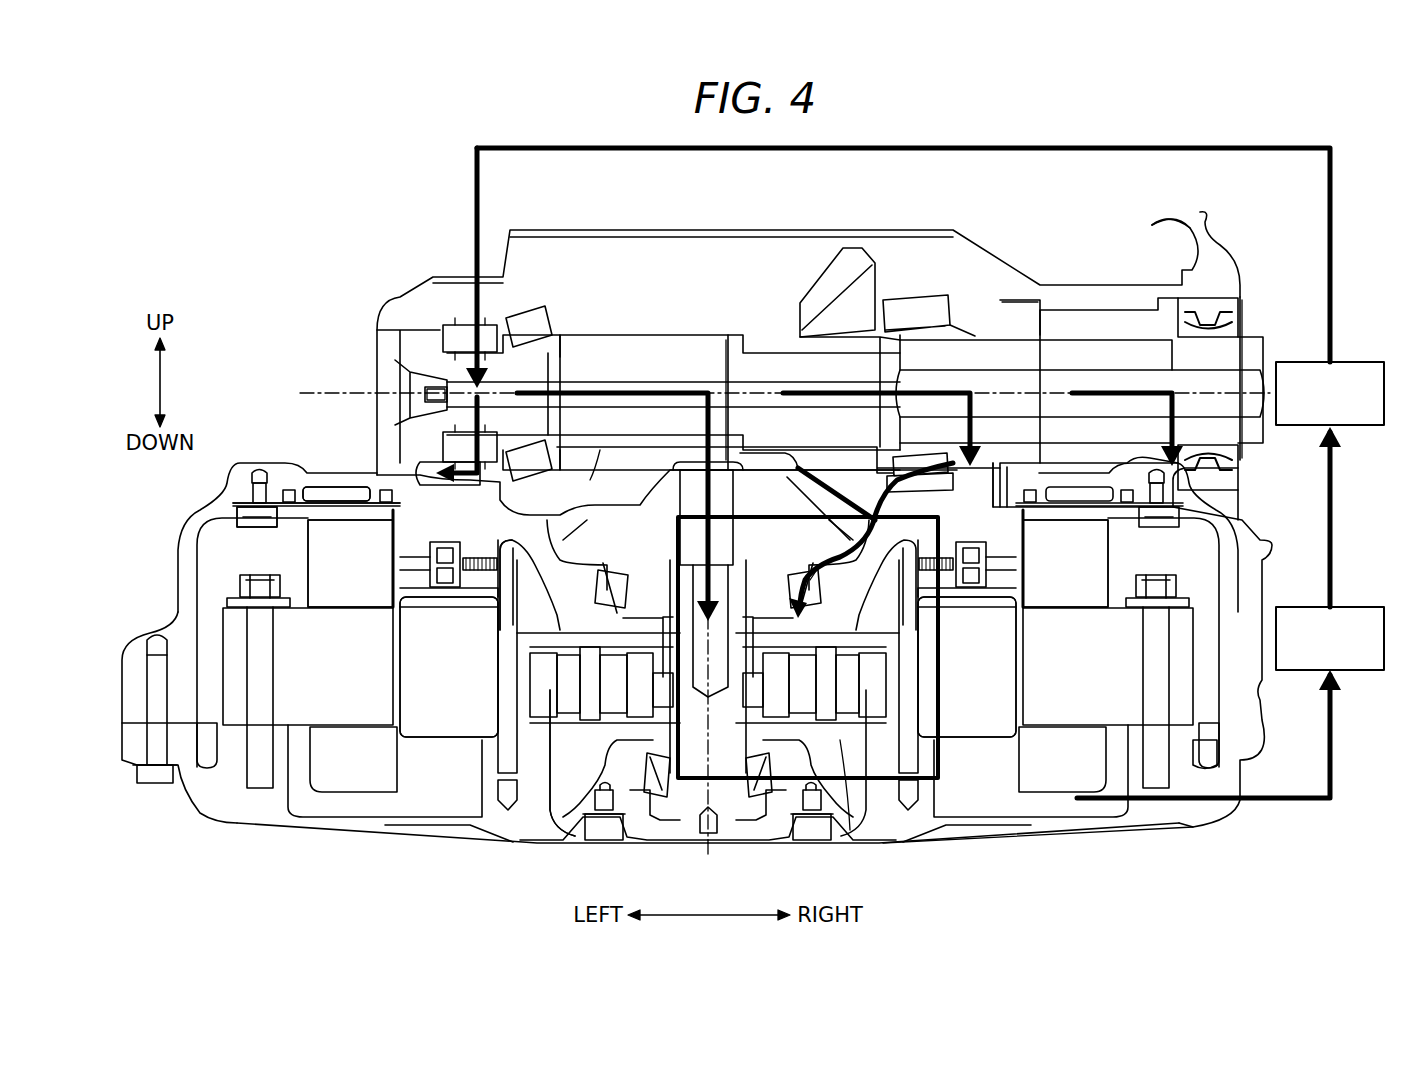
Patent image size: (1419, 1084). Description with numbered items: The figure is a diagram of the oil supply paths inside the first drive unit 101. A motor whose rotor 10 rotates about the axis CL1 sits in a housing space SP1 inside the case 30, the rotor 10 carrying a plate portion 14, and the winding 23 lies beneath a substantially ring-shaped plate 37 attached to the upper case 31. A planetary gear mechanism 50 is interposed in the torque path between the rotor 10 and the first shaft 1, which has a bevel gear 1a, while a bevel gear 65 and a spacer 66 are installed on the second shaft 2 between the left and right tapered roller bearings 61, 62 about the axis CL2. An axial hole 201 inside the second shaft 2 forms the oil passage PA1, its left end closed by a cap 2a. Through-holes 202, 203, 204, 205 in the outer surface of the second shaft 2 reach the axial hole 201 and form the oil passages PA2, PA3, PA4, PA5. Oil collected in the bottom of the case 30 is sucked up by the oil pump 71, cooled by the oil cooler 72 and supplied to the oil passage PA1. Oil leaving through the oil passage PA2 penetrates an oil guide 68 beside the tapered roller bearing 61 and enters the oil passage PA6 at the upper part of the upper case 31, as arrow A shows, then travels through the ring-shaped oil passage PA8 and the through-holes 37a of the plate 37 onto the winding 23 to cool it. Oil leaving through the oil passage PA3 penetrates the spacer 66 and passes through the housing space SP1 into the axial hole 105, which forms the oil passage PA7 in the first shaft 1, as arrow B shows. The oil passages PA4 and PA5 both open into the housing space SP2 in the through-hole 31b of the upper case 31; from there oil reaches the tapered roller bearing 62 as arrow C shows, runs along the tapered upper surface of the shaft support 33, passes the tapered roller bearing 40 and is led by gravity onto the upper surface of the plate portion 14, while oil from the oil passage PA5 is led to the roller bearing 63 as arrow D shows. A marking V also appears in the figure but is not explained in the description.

The first drive unit 101 is at (315, 255).
The first shaft 1 is at (722, 820).
The bevel gear 1a is at (650, 382).
The second shaft 2 is at (595, 380).
The cap 2a is at (435, 385).
The rotor 10 is at (965, 750).
The plate portion 14 is at (900, 672).
The winding 23 is at (320, 557).
The case 30 is at (1072, 842).
The upper case 31 is at (178, 600).
The through-hole 31b is at (1078, 470).
The shaft support 33 is at (498, 620).
The plate 37 is at (245, 520).
The through-holes 37a is at (335, 487).
The tapered roller bearing 40 is at (590, 590).
The planetary gear mechanism 50 is at (575, 750).
The tapered roller bearing 61 is at (525, 320).
The tapered roller bearing 62 is at (915, 300).
The roller bearing 63 is at (1205, 318).
The bevel gear 65 is at (828, 278).
The spacer 66 is at (635, 335).
The oil guide 68 is at (460, 325).
The oil pump 71 is at (1340, 607).
The oil cooler 72 is at (1340, 362).
The axial hole 105 is at (760, 535).
The axial hole 201 is at (1055, 395).
The through-holes 202 is at (425, 390).
The through-holes 203 is at (730, 410).
The through-holes 204 is at (998, 420).
The through-holes 205 is at (1175, 465).
The oil passage PA1 is at (1110, 395).
The oil passage PA2 is at (424, 392).
The oil passage PA3 is at (732, 412).
The oil passage PA4 is at (1000, 422).
The oil passage PA5 is at (1247, 397).
The oil passage PA6 is at (425, 470).
The oil passage PA7 is at (693, 540).
The oil passage PA8 is at (335, 500).
The housing space SP1 is at (598, 440).
The housing space SP2 is at (1005, 540).
The axis CL1 is at (706, 661).
The axis CL2 is at (785, 393).
The arrow A is at (450, 492).
The arrow B is at (727, 592).
The arrow C is at (820, 554).
The arrow D is at (1154, 439).
The vertical line V is at (845, 750).